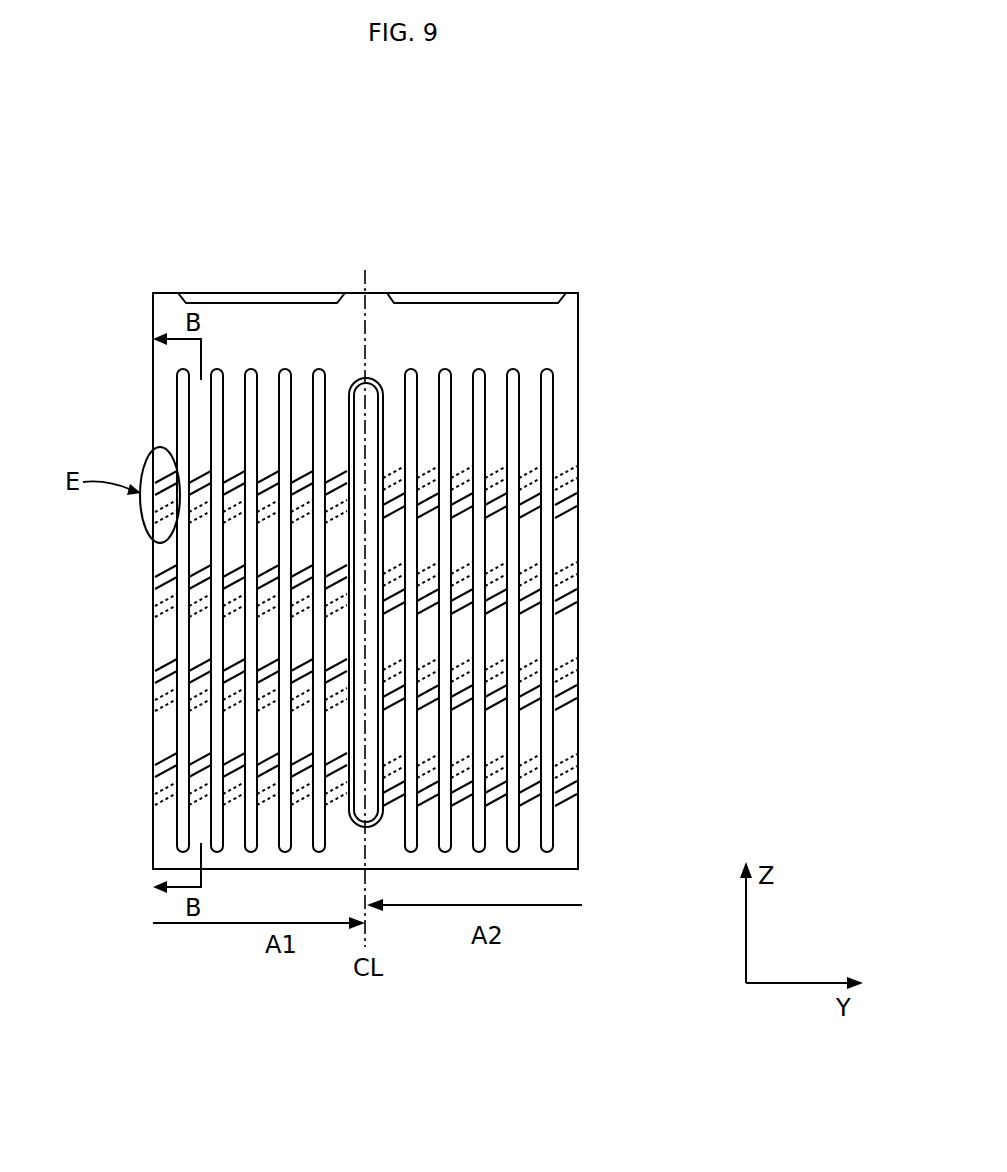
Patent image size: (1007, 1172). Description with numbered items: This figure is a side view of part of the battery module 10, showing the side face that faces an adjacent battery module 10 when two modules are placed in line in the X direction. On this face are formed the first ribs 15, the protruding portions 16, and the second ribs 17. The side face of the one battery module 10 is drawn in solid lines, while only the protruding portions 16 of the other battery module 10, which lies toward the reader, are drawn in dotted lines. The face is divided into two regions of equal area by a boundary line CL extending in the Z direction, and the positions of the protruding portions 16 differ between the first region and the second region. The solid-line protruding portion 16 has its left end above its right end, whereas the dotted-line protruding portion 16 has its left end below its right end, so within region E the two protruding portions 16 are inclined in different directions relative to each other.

The battery module 10 is at (552, 262).
The first rib 15 is at (313, 380).
The protruding portion 16 is at (165, 473).
The second rib 17 is at (378, 383).